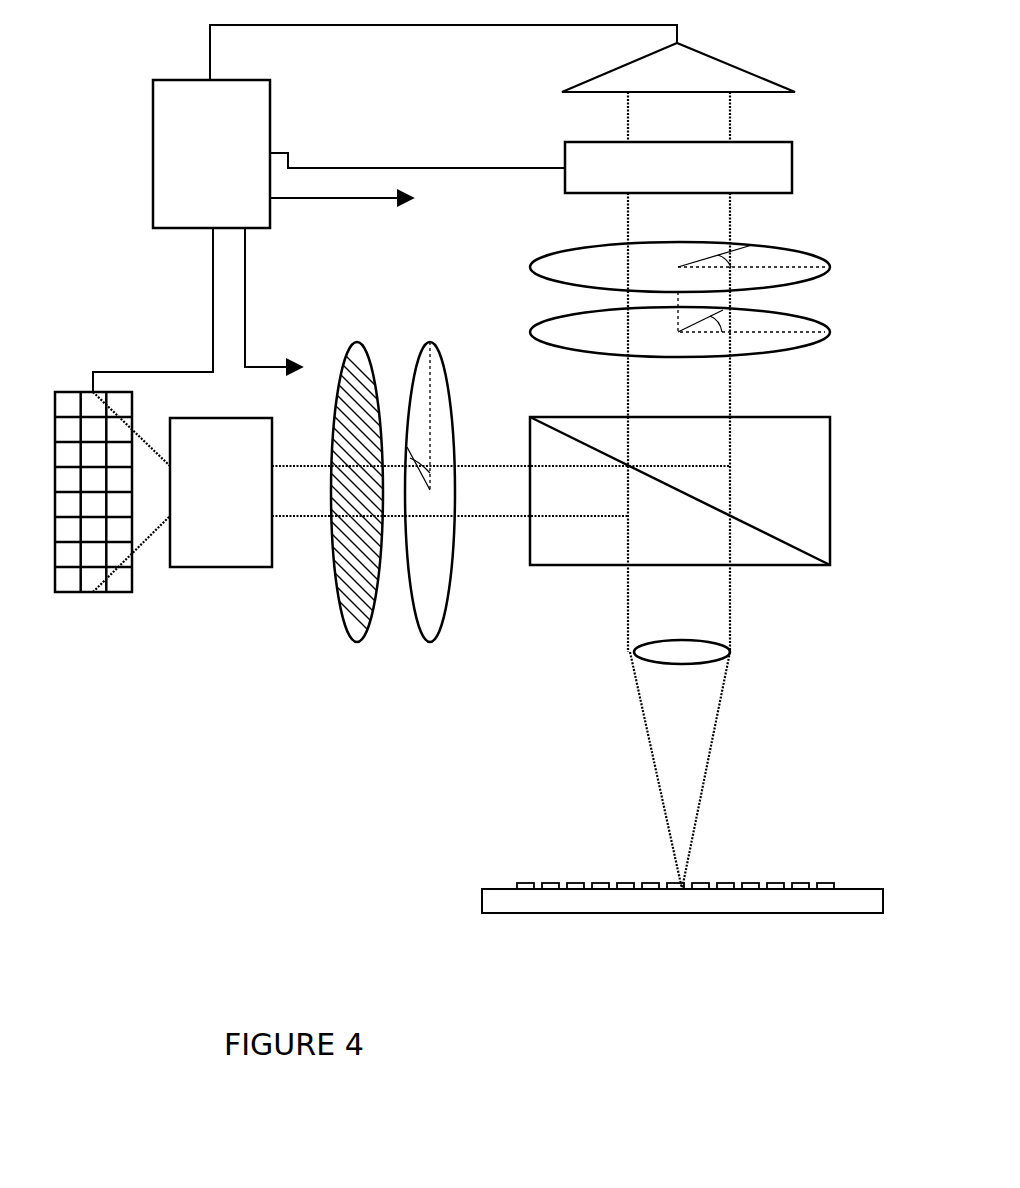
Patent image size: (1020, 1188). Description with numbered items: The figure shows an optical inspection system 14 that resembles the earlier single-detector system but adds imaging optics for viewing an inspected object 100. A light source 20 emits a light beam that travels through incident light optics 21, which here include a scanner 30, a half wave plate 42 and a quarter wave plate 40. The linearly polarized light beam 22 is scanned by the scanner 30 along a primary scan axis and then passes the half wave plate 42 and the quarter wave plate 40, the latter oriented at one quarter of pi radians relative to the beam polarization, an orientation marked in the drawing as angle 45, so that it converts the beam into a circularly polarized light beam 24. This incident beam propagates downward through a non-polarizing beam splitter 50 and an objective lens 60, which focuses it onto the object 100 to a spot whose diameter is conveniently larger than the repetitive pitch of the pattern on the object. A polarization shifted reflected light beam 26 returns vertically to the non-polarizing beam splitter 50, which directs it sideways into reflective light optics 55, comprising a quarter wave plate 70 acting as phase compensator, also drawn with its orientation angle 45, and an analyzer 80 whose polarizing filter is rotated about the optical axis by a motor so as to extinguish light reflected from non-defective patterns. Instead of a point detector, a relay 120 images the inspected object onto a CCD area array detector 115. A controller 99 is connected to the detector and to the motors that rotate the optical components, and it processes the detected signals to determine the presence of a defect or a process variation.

The system 14 is at (524, 1044).
The light source 20 is at (678, 67).
The incident light optics 21 is at (480, 283).
The linearly polarized light beam 22 is at (733, 217).
The circularly polarized light beam 24 is at (628, 370).
The polarization shifted reflected light beam 26 is at (648, 738).
The scanner 30 is at (678, 167).
The quarter wave plate 40 is at (565, 350).
The half wave plate 42 is at (582, 250).
The angle 45 is at (584, 374).
The non-polarizing beam splitter 50 is at (810, 416).
The reflective light optics 55 is at (360, 678).
The objective lens 60 is at (712, 642).
The quarter wave plate 70 is at (430, 342).
The analyzer 80 is at (355, 342).
The controller 99 is at (385, 218).
The object 100 is at (493, 888).
The CCD area array detector 115 is at (103, 592).
The relay 120 is at (221, 492).